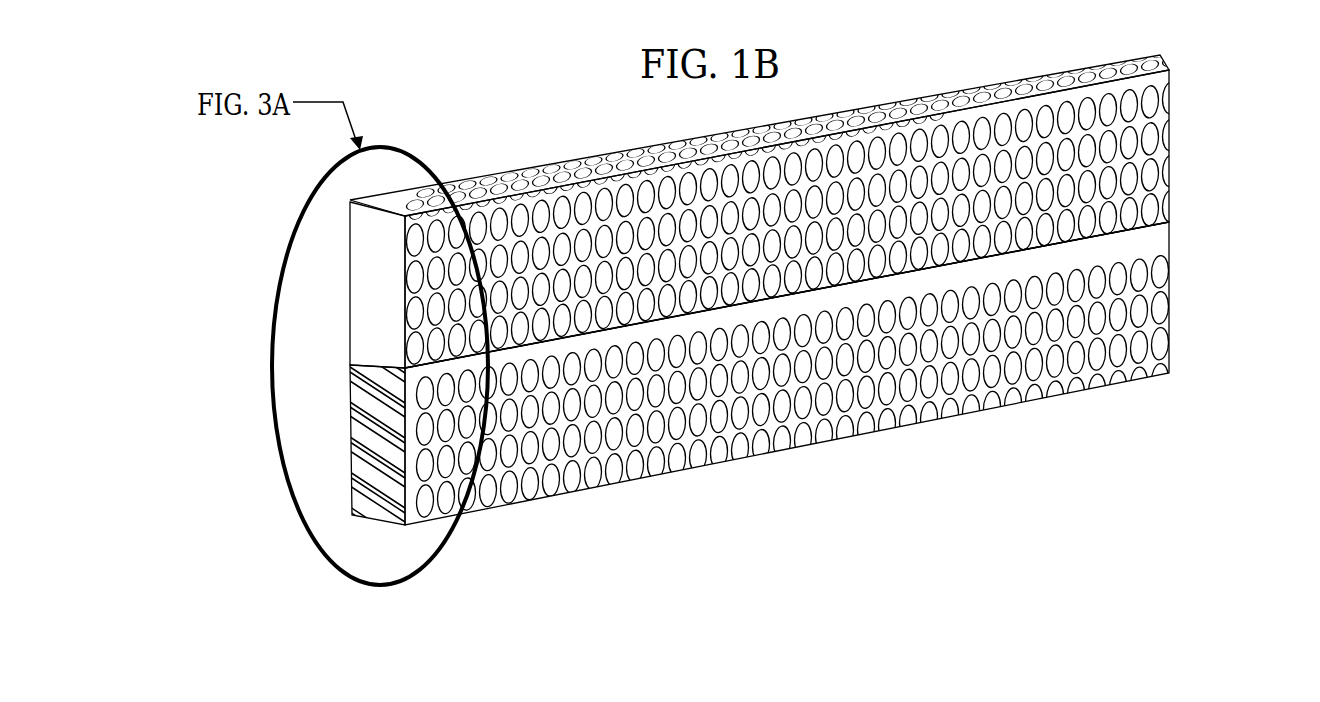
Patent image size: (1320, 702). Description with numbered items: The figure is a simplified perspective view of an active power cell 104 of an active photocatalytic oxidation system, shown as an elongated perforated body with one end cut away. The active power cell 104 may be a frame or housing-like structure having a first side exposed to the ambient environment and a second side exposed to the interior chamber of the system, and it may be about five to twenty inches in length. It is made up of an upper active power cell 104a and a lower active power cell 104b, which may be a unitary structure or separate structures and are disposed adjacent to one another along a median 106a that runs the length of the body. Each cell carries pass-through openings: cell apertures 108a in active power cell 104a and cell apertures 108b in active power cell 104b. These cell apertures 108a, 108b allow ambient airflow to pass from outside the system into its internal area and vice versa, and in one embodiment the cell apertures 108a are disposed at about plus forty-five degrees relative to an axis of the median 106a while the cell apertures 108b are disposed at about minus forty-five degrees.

The active power cell 104 is at (503, 96).
The active power cell 104a is at (1169, 150).
The active power cell 104b is at (1170, 302).
The median 106a is at (1169, 216).
The cell apertures 108a is at (892, 100).
The cell apertures 108b is at (1162, 255).